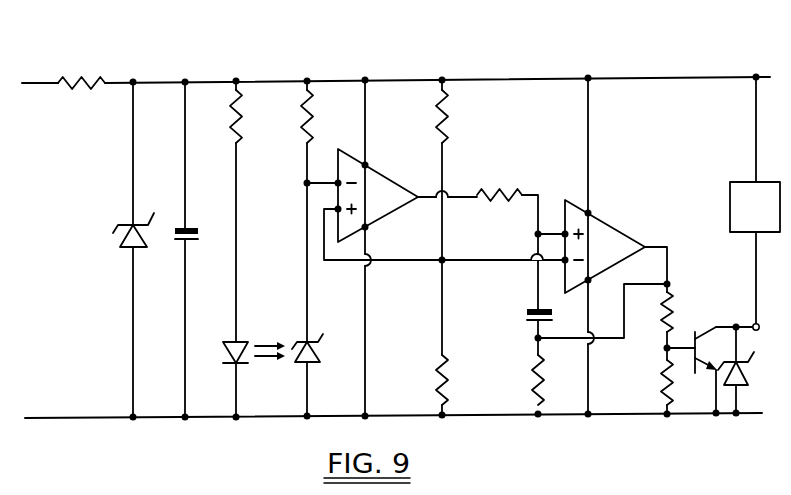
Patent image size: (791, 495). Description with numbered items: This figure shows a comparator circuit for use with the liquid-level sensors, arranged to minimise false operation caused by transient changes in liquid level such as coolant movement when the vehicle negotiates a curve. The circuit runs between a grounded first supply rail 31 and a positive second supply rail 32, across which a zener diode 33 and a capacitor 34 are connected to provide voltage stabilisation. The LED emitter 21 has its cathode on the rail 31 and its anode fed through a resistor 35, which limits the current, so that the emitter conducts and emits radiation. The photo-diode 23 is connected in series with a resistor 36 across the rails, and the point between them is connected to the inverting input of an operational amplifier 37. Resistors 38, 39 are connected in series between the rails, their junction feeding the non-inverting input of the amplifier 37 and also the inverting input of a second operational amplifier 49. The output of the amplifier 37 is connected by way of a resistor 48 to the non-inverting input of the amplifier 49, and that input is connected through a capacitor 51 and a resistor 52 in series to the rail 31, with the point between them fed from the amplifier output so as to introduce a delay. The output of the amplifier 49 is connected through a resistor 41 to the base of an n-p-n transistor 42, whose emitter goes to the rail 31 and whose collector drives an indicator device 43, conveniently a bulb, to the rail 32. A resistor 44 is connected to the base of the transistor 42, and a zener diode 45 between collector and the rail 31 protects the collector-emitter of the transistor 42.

The LED emitter 21 is at (248, 338).
The photo-diode 23 is at (313, 350).
The first supply rail 31 is at (90, 419).
The second supply rail 32 is at (42, 82).
The zener diode 33 is at (128, 250).
The capacitor 34 is at (192, 230).
The resistor 35 is at (229, 124).
The resistor 36 is at (300, 127).
The operational amplifier 37 is at (380, 183).
The resistor 38 is at (449, 132).
The resistor 39 is at (448, 363).
The resistor 41 is at (678, 327).
The n-p-n transistor 42 is at (697, 366).
The indicator device 43 is at (729, 190).
The resistor 44 is at (660, 383).
The zener diode 45 is at (752, 370).
The resistor 48 is at (508, 192).
The second operational amplifier 49 is at (608, 238).
The capacitor 51 is at (533, 306).
The resistor 52 is at (532, 372).